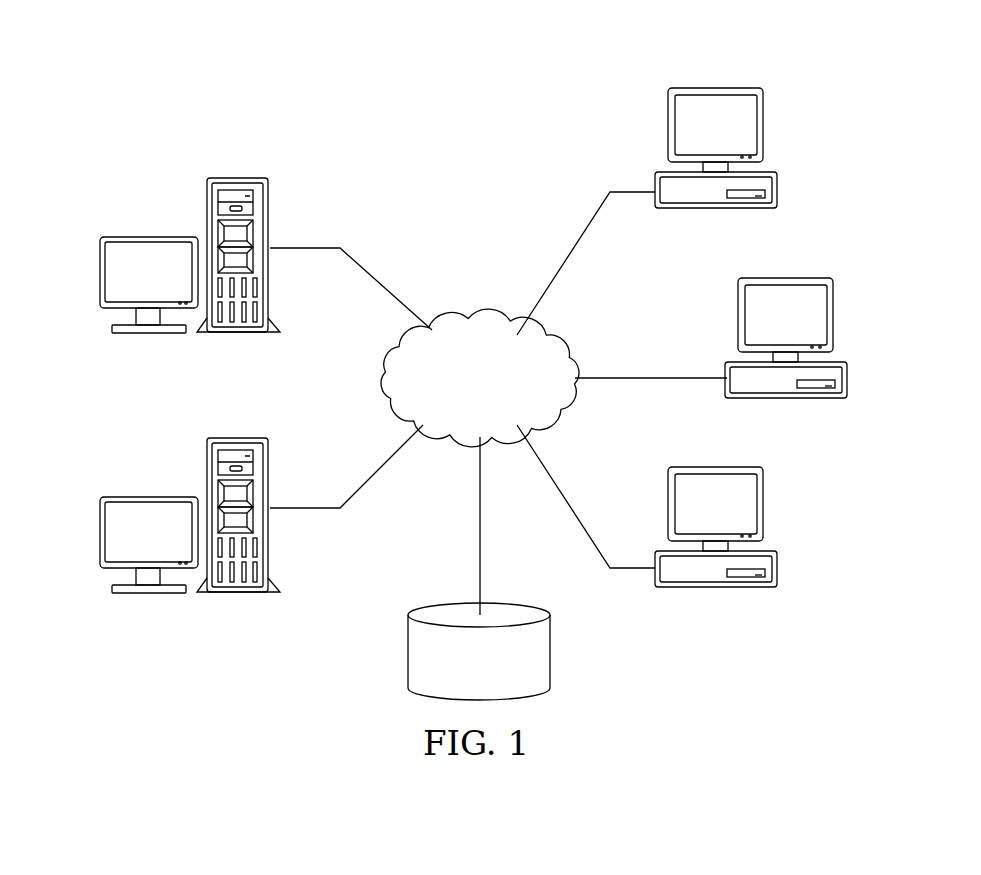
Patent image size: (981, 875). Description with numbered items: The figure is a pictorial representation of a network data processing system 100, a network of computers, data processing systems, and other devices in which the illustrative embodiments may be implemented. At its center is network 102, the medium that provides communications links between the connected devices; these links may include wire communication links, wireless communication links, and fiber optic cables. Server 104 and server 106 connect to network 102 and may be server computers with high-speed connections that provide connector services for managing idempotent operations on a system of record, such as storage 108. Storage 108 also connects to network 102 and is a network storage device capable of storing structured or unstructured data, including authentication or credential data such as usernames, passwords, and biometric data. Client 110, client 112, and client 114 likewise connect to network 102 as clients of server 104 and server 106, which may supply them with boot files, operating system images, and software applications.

The network data processing system 100 is at (343, 73).
The network 102 is at (450, 324).
The server 104 is at (100, 272).
The server 106 is at (100, 558).
The storage 108 is at (408, 651).
The client 110 is at (777, 182).
The client 112 is at (847, 388).
The client 114 is at (777, 577).